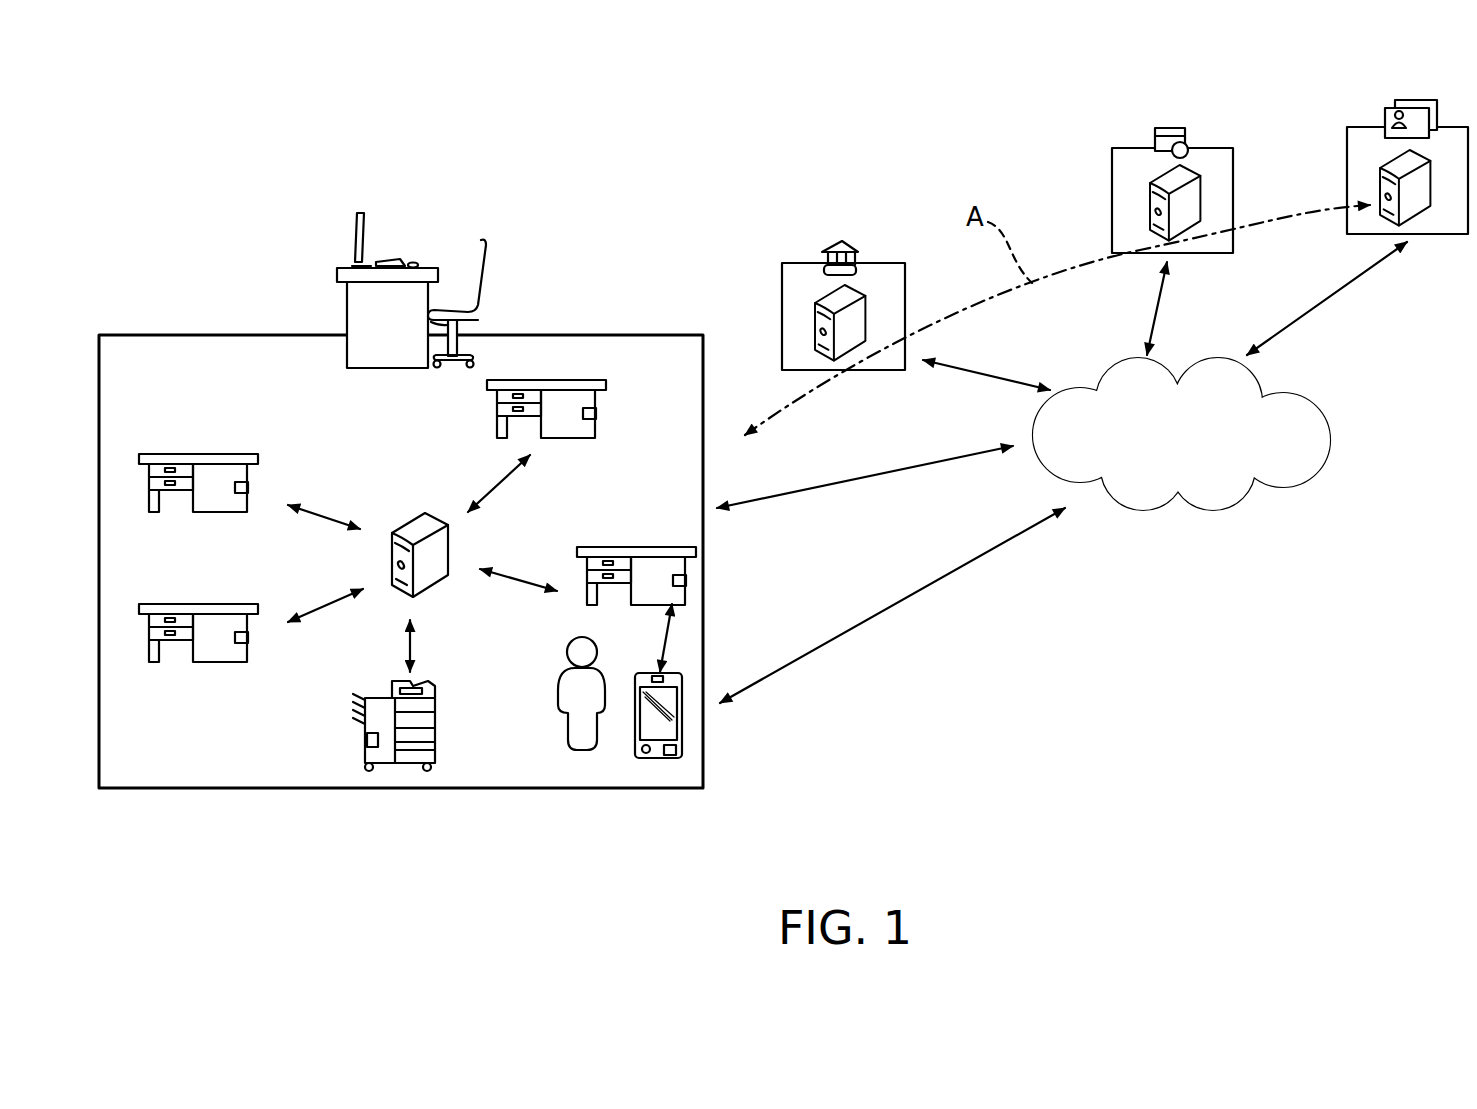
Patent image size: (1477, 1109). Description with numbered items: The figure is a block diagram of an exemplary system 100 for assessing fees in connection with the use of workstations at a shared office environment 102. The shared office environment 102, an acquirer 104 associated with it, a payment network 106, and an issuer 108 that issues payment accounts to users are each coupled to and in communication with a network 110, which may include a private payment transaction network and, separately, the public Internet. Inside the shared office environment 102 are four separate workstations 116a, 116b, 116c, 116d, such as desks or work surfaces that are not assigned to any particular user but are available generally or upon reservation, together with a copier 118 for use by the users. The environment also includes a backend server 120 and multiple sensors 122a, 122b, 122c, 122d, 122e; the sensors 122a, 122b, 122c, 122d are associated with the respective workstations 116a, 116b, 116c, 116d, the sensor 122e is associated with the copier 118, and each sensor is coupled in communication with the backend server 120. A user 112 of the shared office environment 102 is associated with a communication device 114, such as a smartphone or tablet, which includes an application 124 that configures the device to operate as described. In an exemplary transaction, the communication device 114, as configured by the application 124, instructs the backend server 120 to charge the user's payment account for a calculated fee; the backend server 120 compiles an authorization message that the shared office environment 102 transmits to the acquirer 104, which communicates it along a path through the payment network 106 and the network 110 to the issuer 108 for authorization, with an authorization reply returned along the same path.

The system 100 is at (648, 207).
The shared office environment 102 is at (576, 335).
The acquirer 104 is at (905, 280).
The payment network 106 is at (1112, 166).
The issuer 108 is at (1347, 140).
The network 110 is at (1315, 397).
The user 112 is at (550, 671).
The communication device 114 is at (660, 760).
The workstation 116a is at (655, 547).
The workstation 116b is at (560, 438).
The workstation 116c is at (209, 454).
The workstation 116d is at (209, 662).
The copier 118 is at (436, 741).
The backend server 120 is at (425, 513).
The sensor 122a is at (686, 578).
The sensor 122b is at (597, 412).
The sensor 122c is at (248, 487).
The sensor 122d is at (248, 638).
The sensor 122e is at (367, 741).
The application 124 is at (684, 744).